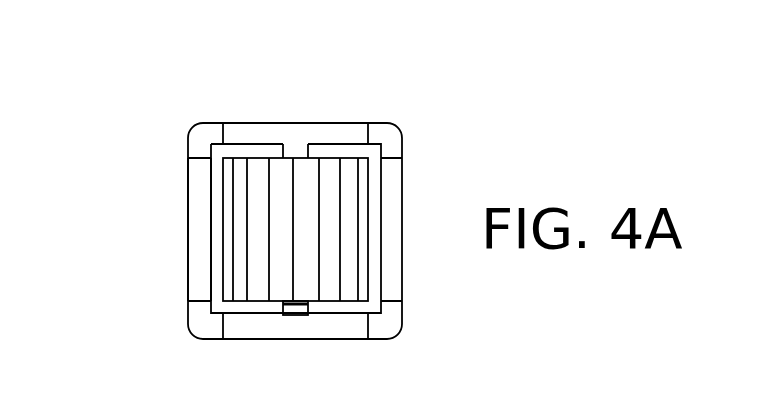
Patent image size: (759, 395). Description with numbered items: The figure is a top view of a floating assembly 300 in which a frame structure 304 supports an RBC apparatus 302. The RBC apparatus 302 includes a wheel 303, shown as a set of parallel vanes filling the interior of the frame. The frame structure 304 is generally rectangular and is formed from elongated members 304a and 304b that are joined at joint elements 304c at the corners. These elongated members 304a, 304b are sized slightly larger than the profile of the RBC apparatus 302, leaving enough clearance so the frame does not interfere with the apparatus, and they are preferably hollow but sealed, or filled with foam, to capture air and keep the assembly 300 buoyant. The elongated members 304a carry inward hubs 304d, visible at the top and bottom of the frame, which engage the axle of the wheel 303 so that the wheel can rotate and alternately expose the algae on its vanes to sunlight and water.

The floating assembly 300 is at (407, 203).
The RBC apparatus 302 is at (238, 160).
The wheel 303 is at (332, 257).
The frame structure 304 is at (290, 123).
The elongated member 304a is at (233, 122).
The elongated member 304b is at (197, 225).
The joint element 304c is at (196, 321).
The inward hub 304d is at (295, 308).